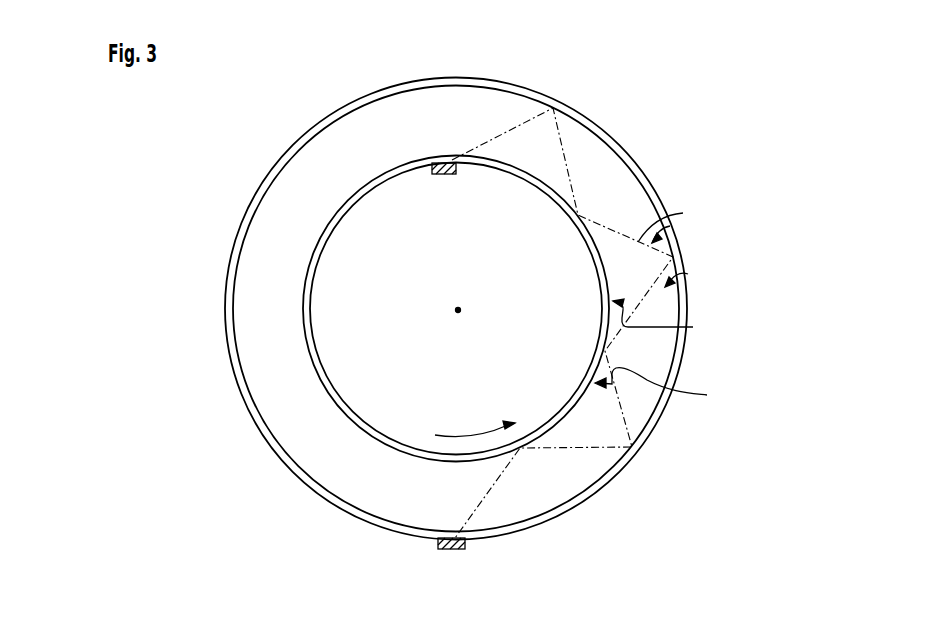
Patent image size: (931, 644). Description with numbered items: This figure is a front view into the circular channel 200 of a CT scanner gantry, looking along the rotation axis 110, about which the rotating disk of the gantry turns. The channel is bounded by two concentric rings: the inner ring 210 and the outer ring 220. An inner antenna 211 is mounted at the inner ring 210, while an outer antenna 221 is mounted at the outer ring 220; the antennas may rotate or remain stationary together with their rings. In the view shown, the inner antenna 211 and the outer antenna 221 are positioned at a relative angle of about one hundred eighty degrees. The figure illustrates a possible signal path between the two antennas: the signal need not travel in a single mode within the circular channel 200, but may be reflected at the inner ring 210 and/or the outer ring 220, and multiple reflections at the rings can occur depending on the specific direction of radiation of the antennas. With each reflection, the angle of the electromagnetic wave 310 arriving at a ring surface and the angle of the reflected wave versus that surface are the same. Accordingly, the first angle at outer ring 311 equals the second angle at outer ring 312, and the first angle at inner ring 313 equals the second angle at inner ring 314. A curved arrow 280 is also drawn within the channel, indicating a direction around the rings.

The circular channel 200 is at (635, 102).
The inner ring 210 is at (304, 304).
The inner antenna 211 is at (445, 176).
The outer ring 220 is at (395, 527).
The outer antenna 221 is at (455, 550).
The rotation axis 110 is at (460, 310).
The direction of rotation 280 is at (480, 432).
The electromagnetic wave 310 is at (683, 213).
The first angle at outer ring 311 is at (670, 226).
The second angle at outer ring 312 is at (688, 274).
The first angle at inner ring 313 is at (693, 327).
The second angle at inner ring 314 is at (673, 390).